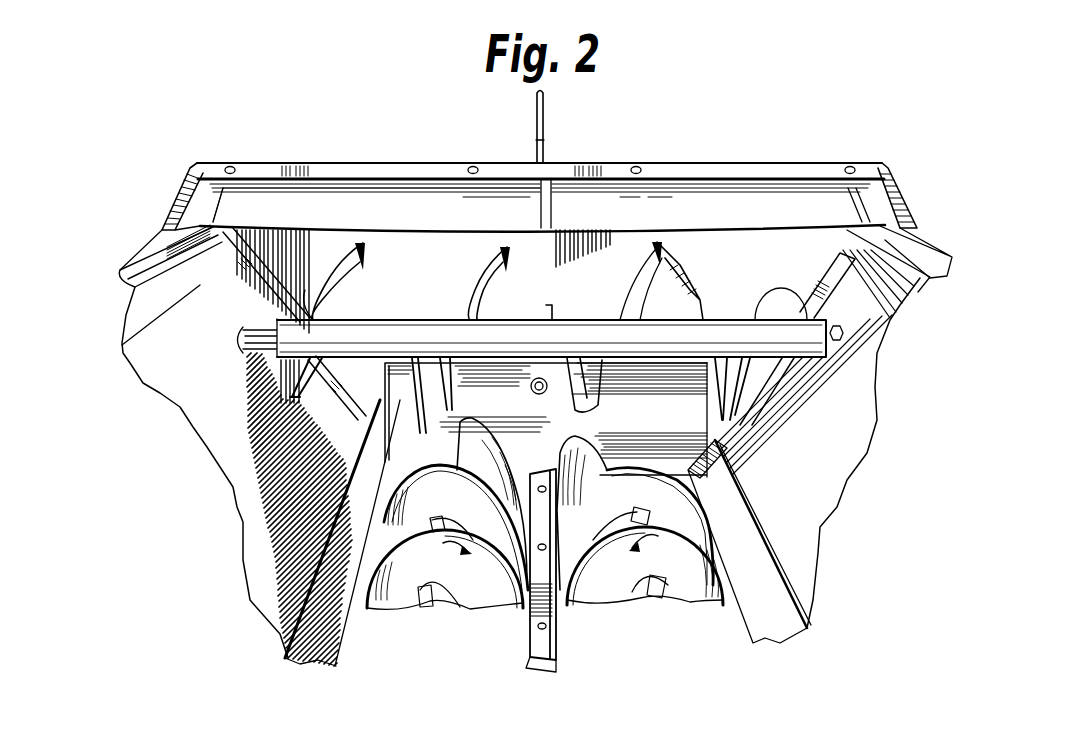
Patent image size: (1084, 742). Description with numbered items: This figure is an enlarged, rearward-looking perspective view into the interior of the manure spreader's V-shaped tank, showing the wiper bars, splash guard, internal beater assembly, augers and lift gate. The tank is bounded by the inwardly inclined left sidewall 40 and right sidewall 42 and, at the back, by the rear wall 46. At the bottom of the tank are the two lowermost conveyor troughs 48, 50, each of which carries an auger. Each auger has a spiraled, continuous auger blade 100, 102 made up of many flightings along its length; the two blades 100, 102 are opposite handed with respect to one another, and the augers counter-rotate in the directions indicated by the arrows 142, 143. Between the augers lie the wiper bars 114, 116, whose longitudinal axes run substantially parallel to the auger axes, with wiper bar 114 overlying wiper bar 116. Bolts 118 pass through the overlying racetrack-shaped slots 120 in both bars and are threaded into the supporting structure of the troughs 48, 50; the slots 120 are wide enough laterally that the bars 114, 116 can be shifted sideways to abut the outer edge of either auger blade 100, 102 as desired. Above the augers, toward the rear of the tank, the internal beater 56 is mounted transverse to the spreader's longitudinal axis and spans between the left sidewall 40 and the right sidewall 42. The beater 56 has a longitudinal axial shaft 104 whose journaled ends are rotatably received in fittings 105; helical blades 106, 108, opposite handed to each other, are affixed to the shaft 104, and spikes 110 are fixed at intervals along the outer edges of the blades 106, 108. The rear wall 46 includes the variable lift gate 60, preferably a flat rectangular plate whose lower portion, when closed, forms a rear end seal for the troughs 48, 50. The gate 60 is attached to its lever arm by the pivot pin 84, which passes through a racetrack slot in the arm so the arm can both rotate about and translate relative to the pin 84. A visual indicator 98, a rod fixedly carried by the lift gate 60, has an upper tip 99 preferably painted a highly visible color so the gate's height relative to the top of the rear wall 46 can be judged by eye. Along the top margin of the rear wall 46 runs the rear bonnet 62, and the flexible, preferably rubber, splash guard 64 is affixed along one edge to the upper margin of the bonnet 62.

The left sidewall 40 is at (850, 430).
The right sidewall 42 is at (190, 392).
The rear wall 46 is at (753, 248).
The conveyor trough 48 is at (718, 528).
The conveyor trough 50 is at (380, 550).
The internal beater 56 is at (582, 343).
The lift gate 60 is at (533, 378).
The rear bonnet 62 is at (196, 176).
The splash guard 64 is at (279, 189).
The pivot pin 84 is at (590, 308).
The visual indicator 98 is at (537, 143).
The upper tip 99 is at (536, 94).
The auger blade 100 is at (593, 467).
The auger blade 102 is at (457, 442).
The axial shaft 104 is at (813, 380).
The fittings 105 is at (845, 335).
The helical blade 106 is at (648, 300).
The helical blade 108 is at (370, 293).
The spikes 110 is at (466, 300).
The wiper bar 114 is at (546, 657).
The wiper bar 116 is at (563, 652).
The bolts 118 is at (553, 615).
The racetrack-shaped slots 120 is at (538, 626).
The arrow 142 is at (655, 538).
The arrow 143 is at (448, 540).